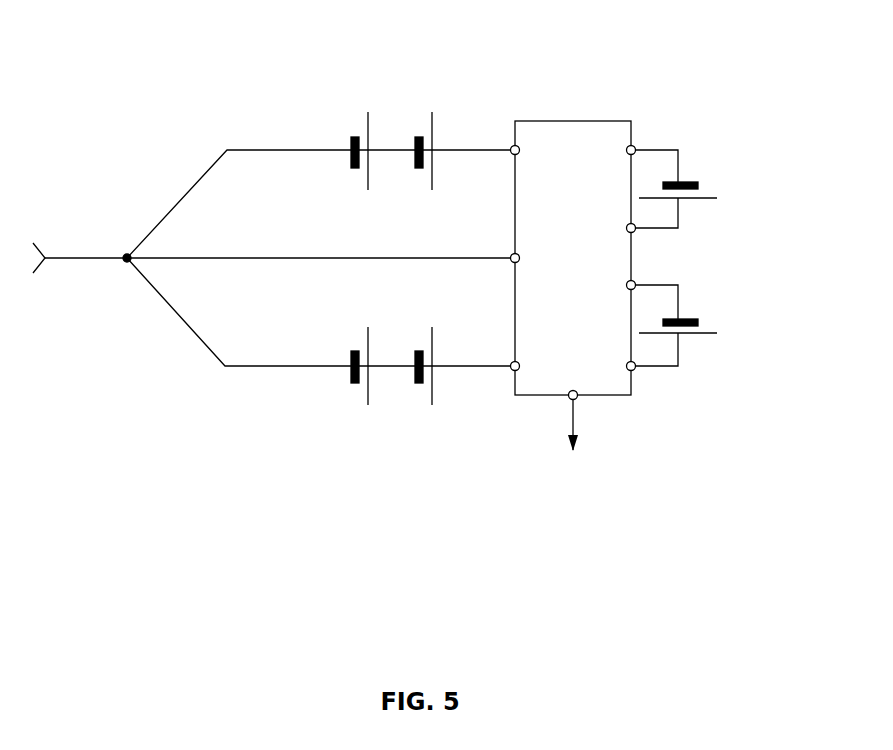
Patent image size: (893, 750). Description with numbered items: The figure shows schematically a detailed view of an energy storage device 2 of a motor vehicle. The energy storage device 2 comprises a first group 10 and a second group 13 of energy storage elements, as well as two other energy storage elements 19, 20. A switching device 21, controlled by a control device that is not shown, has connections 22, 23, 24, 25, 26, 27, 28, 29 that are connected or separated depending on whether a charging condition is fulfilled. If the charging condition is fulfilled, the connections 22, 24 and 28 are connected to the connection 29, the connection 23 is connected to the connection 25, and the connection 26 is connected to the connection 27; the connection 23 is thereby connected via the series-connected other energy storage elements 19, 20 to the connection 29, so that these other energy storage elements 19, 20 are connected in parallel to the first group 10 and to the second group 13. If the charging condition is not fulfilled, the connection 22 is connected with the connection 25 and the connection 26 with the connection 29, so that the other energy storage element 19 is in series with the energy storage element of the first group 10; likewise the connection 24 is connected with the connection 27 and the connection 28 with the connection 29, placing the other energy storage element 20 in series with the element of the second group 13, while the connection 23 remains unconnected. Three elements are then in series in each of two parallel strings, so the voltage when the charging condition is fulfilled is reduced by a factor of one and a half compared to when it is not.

The energy storage device 2 is at (178, 455).
The first group 10 is at (393, 118).
The second group 13 is at (388, 382).
The other energy storage element 19 is at (703, 187).
The other energy storage element 20 is at (703, 323).
The switching device 21 is at (579, 135).
The connection 22 is at (511, 146).
The connection 23 is at (511, 254).
The connection 24 is at (512, 362).
The connection 25 is at (635, 147).
The connection 26 is at (628, 227).
The connection 27 is at (627, 283).
The connection 28 is at (634, 370).
The connection 29 is at (571, 390).